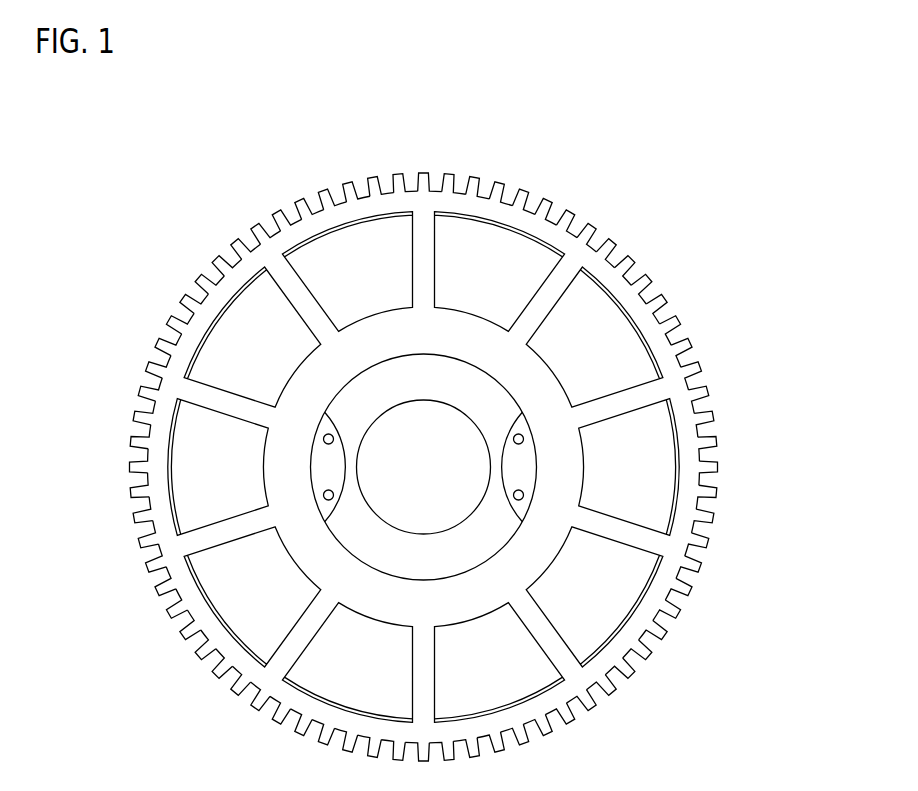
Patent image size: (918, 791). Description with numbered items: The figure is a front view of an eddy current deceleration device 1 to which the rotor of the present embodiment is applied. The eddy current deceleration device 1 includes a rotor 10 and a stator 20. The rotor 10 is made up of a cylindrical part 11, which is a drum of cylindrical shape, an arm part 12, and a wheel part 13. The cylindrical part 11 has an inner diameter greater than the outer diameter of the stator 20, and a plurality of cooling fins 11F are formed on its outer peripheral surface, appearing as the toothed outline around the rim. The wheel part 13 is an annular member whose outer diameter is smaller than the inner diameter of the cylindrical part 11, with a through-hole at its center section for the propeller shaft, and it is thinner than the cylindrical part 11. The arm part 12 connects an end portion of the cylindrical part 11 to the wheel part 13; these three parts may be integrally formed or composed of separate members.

The eddy current deceleration device 1 is at (430, 106).
The rotor 10 is at (753, 442).
The cylindrical part 11 is at (688, 480).
The cooling fins 11F is at (655, 272).
The arm part 12 is at (422, 275).
The wheel part 13 is at (557, 470).
The stator 20 is at (235, 332).